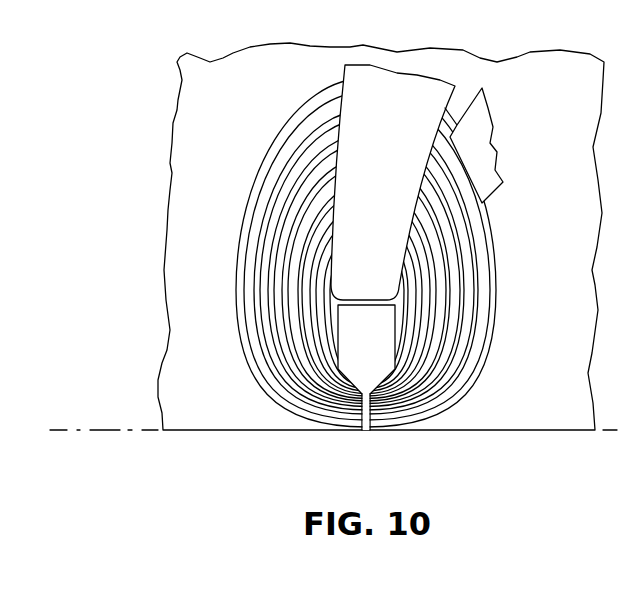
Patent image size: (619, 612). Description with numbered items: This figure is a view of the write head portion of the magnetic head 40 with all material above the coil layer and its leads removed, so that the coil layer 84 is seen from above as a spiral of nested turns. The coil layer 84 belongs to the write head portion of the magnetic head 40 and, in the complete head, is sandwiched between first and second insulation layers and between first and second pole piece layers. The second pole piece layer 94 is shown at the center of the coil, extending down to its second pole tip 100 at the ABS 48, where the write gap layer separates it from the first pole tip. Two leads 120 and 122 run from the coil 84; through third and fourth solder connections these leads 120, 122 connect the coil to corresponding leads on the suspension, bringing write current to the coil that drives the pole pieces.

The magnetic head 40 is at (516, 234).
The ABS 48 is at (110, 430).
The coil layer 84 is at (470, 328).
The second pole piece layer 94 is at (350, 357).
The second pole tip 100 is at (367, 432).
The lead 120 is at (352, 181).
The lead 122 is at (488, 141).